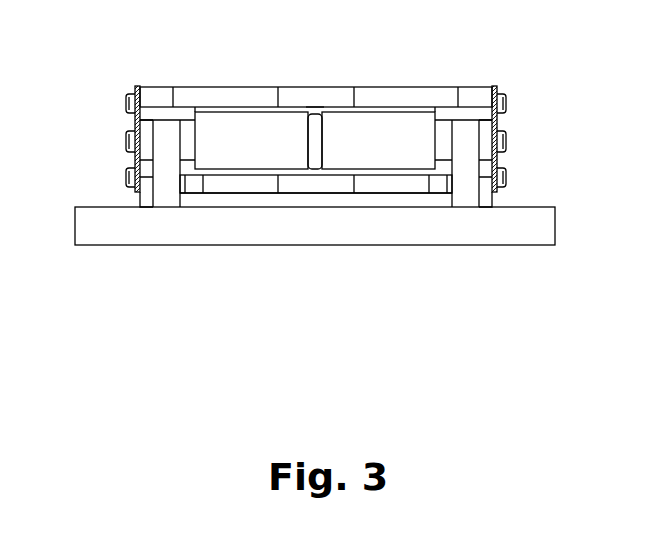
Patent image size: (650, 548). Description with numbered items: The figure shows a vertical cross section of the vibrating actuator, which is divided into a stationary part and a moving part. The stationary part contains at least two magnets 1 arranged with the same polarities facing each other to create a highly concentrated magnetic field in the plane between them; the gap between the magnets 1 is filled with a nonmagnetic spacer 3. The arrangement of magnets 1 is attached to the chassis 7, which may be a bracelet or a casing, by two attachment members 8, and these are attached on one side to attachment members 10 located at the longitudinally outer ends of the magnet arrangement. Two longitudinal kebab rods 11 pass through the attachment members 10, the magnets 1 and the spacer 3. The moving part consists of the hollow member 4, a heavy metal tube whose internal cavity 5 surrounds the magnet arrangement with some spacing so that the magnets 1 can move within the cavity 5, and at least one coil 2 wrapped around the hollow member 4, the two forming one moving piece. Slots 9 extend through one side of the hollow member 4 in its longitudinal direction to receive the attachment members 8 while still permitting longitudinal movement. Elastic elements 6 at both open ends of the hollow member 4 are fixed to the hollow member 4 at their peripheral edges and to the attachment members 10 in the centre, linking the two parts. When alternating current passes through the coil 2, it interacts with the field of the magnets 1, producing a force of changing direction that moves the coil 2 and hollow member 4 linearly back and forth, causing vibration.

The magnets 1 is at (250, 128).
The coil 2 is at (312, 116).
The spacer 3 is at (313, 93).
The hollow member 4 is at (221, 92).
The cavity 5 is at (250, 177).
The elastic elements 6 is at (136, 118).
The chassis 7 is at (385, 232).
The attachment members 8 is at (170, 182).
The slots 9 is at (146, 191).
The attachment members 10 is at (147, 121).
The kebab rods 11 is at (132, 138).